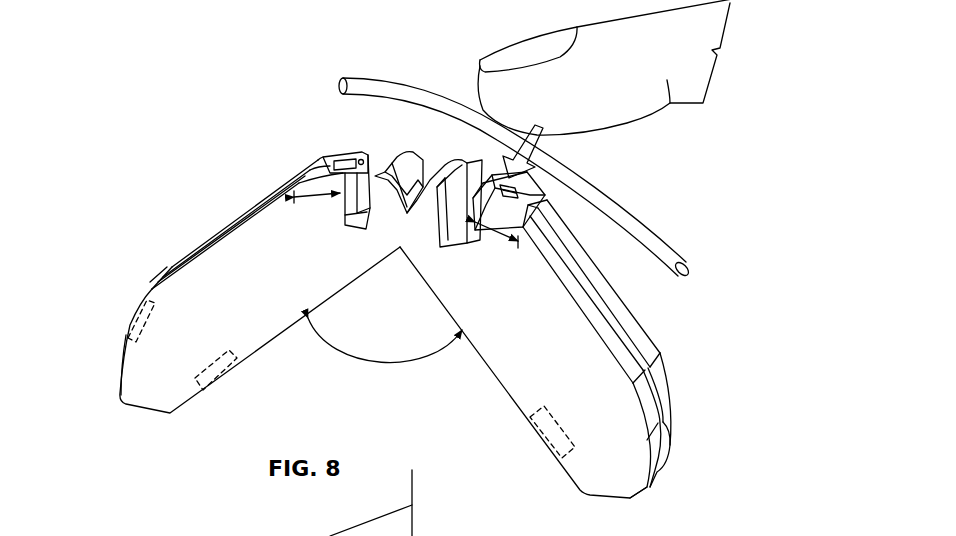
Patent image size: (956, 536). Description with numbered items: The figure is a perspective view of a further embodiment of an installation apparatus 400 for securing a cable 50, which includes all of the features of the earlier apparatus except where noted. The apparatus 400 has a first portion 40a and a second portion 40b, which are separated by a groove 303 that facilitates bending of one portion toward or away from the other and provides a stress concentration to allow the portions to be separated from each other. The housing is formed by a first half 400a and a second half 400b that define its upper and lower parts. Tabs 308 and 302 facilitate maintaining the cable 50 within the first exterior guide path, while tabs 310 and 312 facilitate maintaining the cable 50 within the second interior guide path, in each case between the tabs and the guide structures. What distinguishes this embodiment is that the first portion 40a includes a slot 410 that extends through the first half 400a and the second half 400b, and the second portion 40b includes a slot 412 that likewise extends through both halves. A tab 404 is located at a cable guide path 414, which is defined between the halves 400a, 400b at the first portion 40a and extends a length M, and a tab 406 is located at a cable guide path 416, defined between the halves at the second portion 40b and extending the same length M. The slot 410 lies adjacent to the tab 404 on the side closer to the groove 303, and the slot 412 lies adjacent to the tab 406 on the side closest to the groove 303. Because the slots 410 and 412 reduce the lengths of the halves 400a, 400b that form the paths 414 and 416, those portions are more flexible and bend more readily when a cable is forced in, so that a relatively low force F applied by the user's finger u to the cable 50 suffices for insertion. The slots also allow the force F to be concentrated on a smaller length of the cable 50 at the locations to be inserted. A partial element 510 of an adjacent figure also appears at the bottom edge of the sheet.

The installation apparatus 400 is at (176, 74).
The first portion 40a is at (195, 232).
The second portion 40b is at (676, 310).
The tab 308 is at (136, 316).
The tab 310 is at (214, 378).
The tab 312 is at (548, 436).
The tab 302 is at (660, 383).
The first half 400a is at (637, 455).
The second half 400b is at (668, 393).
The tab 404 is at (337, 164).
The cable guide path 414 is at (345, 158).
The slot 410 is at (378, 166).
The groove 303 is at (434, 160).
The slot 412 is at (478, 163).
The tab 406 is at (520, 170).
The cable guide path 416 is at (522, 200).
The cable 50 is at (374, 82).
The user's finger u is at (604, 37).
The force F is at (540, 124).
The length M is at (406, 226).
The component of adjacent figure 510 is at (232, 535).